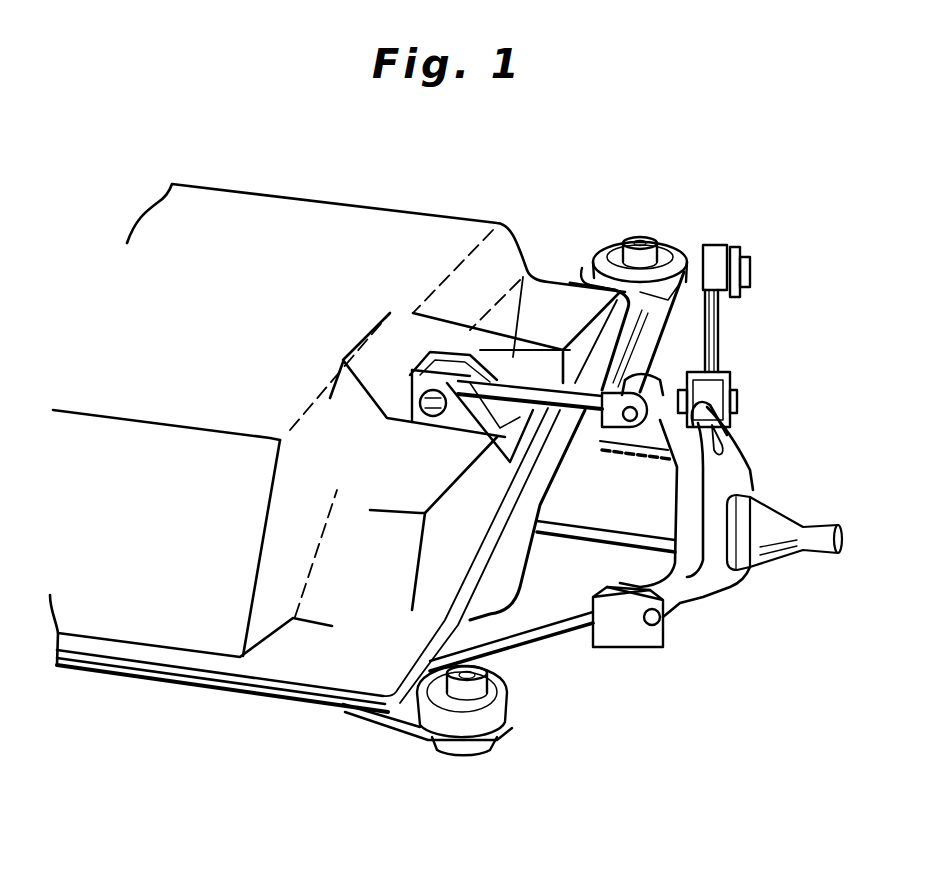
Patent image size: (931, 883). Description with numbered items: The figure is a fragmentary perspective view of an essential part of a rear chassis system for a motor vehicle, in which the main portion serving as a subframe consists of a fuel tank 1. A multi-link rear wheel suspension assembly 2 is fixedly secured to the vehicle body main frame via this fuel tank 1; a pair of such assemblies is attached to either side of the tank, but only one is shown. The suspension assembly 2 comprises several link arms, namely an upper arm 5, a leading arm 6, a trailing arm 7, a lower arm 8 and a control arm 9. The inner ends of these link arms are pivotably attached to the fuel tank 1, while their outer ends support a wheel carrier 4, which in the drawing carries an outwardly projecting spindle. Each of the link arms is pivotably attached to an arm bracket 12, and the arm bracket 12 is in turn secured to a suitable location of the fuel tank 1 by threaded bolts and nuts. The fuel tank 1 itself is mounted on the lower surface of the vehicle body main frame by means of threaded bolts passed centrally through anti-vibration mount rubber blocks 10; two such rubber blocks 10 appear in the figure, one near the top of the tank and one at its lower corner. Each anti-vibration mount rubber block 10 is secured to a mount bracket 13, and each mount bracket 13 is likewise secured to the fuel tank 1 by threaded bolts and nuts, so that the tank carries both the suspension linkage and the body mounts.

The fuel tank 1 is at (447, 206).
The multi-link rear wheel suspension assembly 2 is at (778, 455).
The wheel carrier 4 is at (707, 590).
The upper arm 5 is at (521, 385).
The leading arm 6 is at (722, 331).
The trailing arm 7 is at (557, 645).
The lower arm 8 is at (577, 543).
The control arm 9 is at (634, 461).
The anti-vibration mount rubber block 10 is at (665, 252).
The arm bracket 12 is at (420, 360).
The mount bracket 13 is at (583, 274).